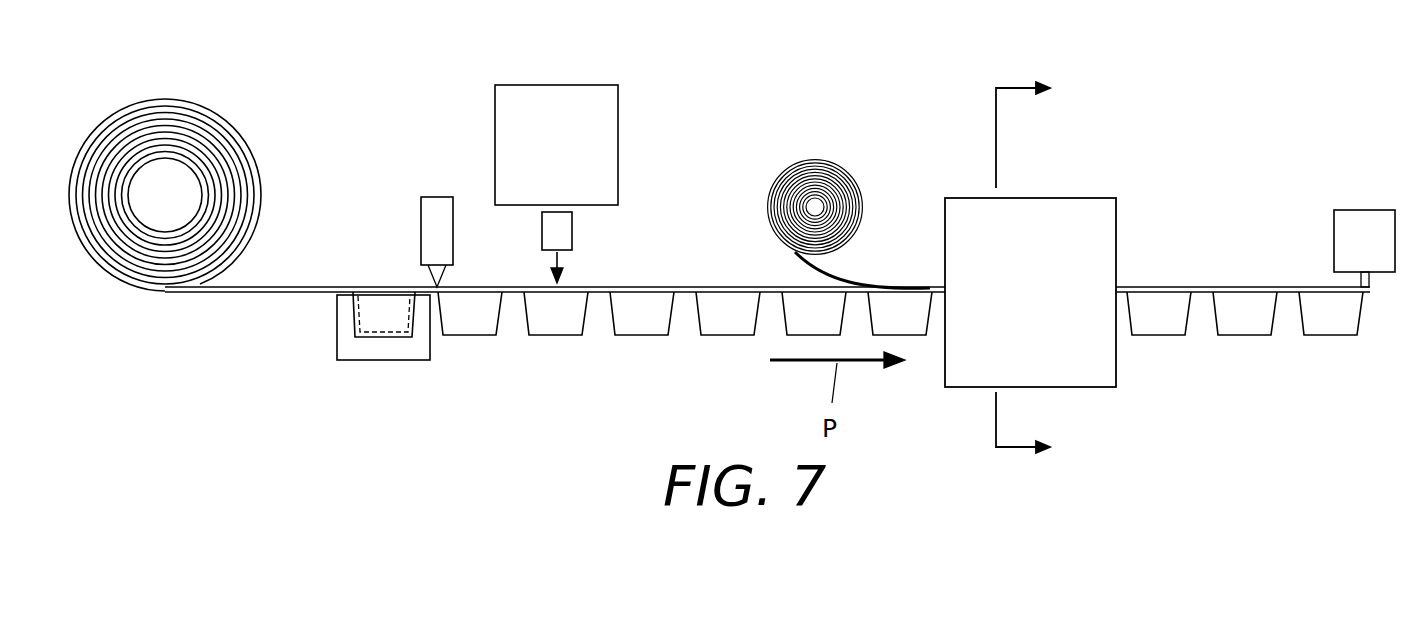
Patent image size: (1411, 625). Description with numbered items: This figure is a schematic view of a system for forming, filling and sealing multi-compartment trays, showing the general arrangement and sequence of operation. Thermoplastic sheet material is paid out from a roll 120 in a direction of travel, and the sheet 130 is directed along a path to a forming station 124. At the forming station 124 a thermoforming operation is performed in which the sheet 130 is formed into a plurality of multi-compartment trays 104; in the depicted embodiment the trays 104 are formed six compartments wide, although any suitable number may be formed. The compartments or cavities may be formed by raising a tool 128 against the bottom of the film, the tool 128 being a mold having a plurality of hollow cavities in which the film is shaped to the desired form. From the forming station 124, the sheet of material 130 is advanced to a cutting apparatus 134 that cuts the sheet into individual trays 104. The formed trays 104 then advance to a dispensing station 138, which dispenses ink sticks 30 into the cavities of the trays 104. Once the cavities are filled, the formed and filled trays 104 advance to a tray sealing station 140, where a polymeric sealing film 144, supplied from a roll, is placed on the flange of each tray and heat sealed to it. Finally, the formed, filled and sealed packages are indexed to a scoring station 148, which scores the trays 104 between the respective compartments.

The roll 120 is at (208, 130).
The sheet 130 is at (282, 285).
The tool 128 is at (337, 328).
The forming station 124 is at (367, 377).
The cutting apparatus 134 is at (435, 195).
The dispensing station 138 is at (557, 82).
The ink sticks 30 is at (557, 230).
The trays 104 is at (468, 337).
The polymeric sealing film 144 is at (833, 177).
The tray sealing station 140 is at (1083, 197).
The scoring station 148 is at (1365, 208).